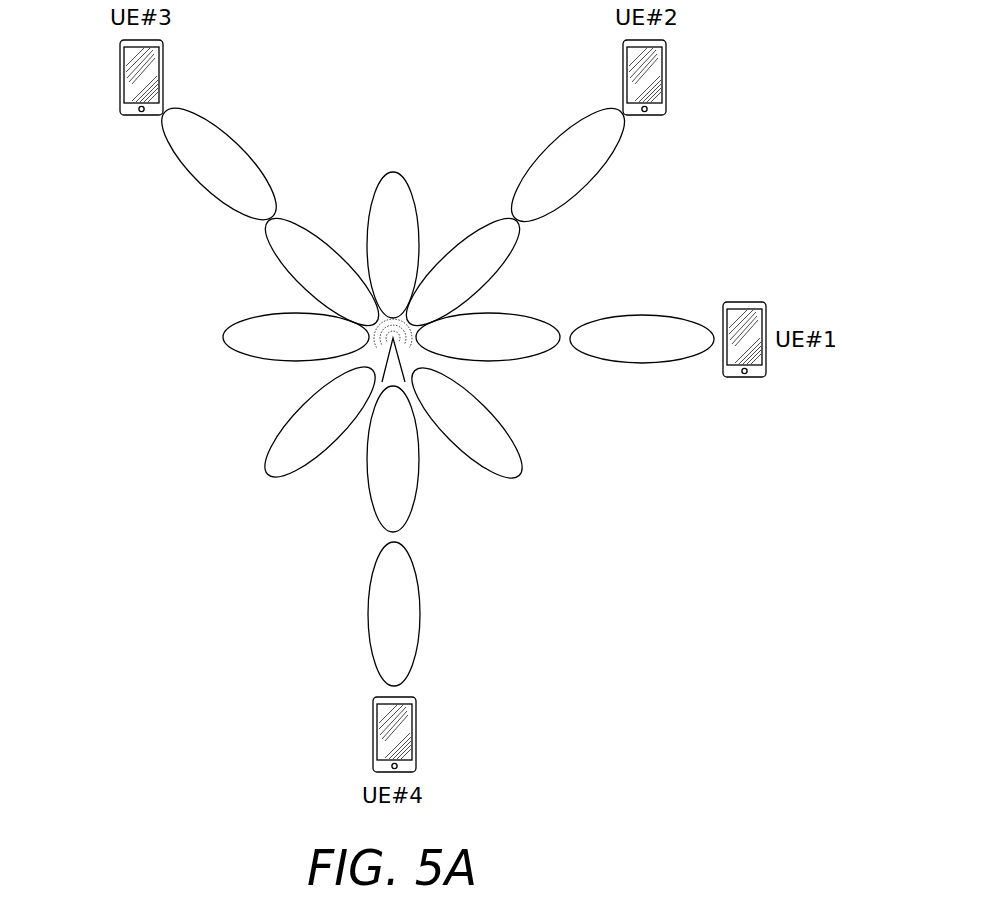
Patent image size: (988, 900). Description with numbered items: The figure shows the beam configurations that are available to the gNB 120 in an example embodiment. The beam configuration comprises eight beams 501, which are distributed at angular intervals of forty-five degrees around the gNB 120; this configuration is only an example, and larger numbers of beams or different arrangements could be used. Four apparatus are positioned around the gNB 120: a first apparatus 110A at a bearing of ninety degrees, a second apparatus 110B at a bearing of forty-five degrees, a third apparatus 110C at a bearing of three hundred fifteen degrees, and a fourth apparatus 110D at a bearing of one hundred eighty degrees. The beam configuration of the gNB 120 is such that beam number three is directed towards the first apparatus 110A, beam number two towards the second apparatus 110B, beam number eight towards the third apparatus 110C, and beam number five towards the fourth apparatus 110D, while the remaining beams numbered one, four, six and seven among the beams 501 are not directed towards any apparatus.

The first apparatus 110A is at (742, 302).
The second apparatus 110B is at (666, 72).
The third apparatus 110C is at (120, 72).
The fourth apparatus 110D is at (416, 730).
The gNB 120 is at (377, 321).
The beams 501 is at (525, 362).